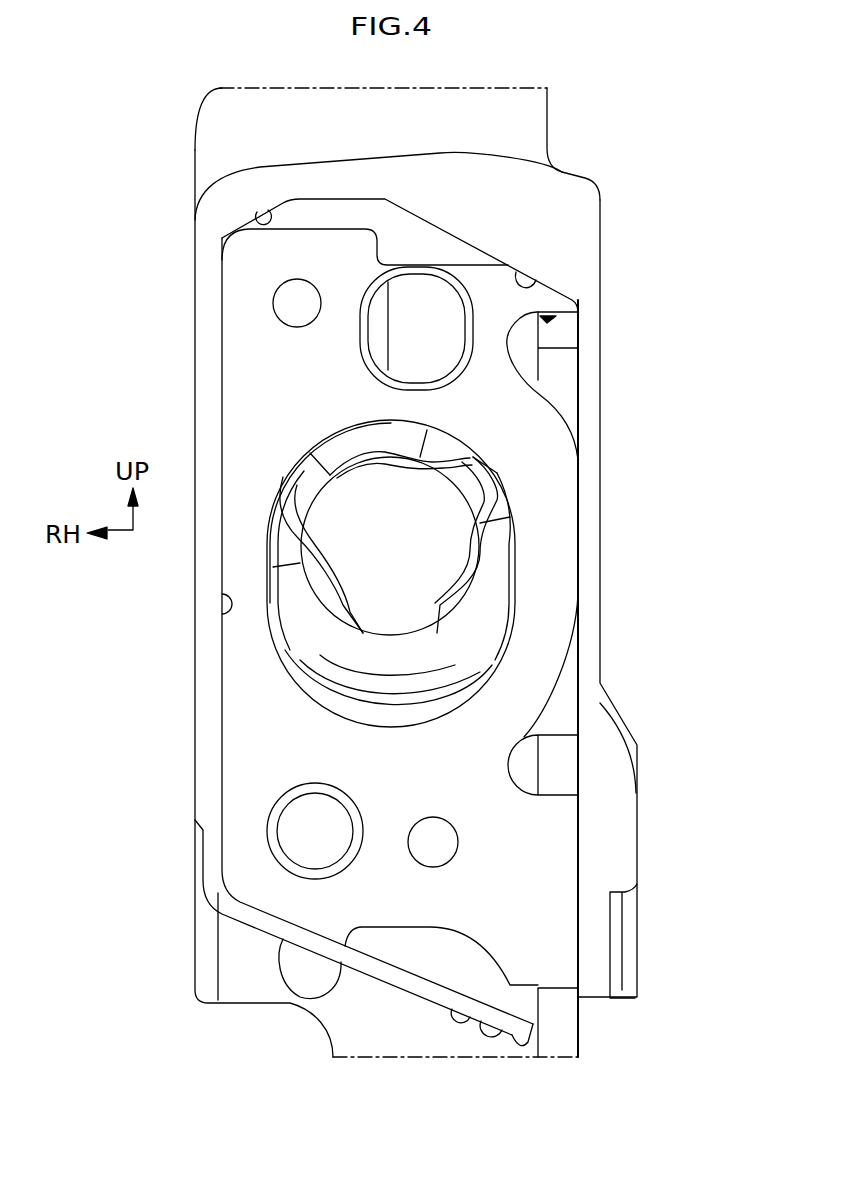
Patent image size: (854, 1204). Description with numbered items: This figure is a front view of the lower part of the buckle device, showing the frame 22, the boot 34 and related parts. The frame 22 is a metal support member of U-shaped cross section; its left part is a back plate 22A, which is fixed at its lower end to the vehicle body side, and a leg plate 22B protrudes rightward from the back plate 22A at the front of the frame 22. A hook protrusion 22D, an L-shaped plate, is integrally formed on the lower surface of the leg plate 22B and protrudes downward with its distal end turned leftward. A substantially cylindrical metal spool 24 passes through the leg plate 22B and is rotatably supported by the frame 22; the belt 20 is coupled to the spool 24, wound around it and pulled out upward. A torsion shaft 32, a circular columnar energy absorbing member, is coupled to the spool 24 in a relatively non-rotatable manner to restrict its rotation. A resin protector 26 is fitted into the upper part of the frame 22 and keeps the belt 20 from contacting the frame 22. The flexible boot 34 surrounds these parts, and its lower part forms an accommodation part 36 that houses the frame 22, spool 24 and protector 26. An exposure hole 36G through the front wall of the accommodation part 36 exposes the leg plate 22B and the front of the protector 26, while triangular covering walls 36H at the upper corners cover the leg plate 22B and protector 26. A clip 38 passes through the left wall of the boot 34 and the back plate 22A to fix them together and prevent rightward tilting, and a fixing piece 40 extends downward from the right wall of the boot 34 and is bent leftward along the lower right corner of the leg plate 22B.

The belt 20 is at (367, 700).
The frame 22 is at (222, 388).
The back plate 22A is at (582, 1038).
The leg plate 22B is at (565, 414).
The hook protrusion 22D is at (283, 980).
The spool 24 is at (343, 430).
The protector 26 is at (433, 237).
The torsion shaft 32 is at (470, 583).
The boot 34 is at (548, 125).
The accommodation part 36 is at (602, 521).
The exposure hole 36G is at (222, 611).
The covering wall 36H is at (267, 210).
The clip 38 is at (627, 990).
The fixing piece 40 is at (363, 977).